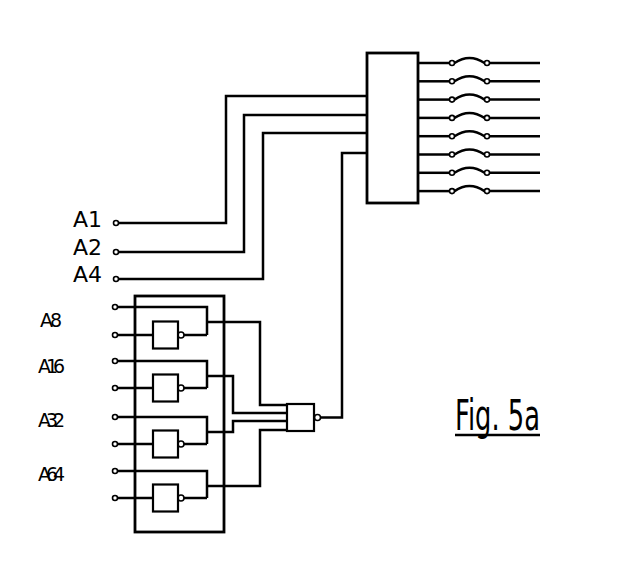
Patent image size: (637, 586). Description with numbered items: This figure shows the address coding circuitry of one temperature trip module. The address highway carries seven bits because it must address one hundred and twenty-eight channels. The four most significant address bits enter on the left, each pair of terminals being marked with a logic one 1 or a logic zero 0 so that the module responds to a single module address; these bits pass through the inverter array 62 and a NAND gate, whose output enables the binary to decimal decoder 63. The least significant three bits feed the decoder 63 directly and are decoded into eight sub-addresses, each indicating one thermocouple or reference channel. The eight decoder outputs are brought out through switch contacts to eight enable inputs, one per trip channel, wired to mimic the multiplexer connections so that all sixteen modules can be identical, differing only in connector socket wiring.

The inverter array 62 is at (190, 533).
The binary to decimal decoder 63 is at (395, 52).
The data line 1 is at (144, 394).
The data line 0 is at (116, 409).